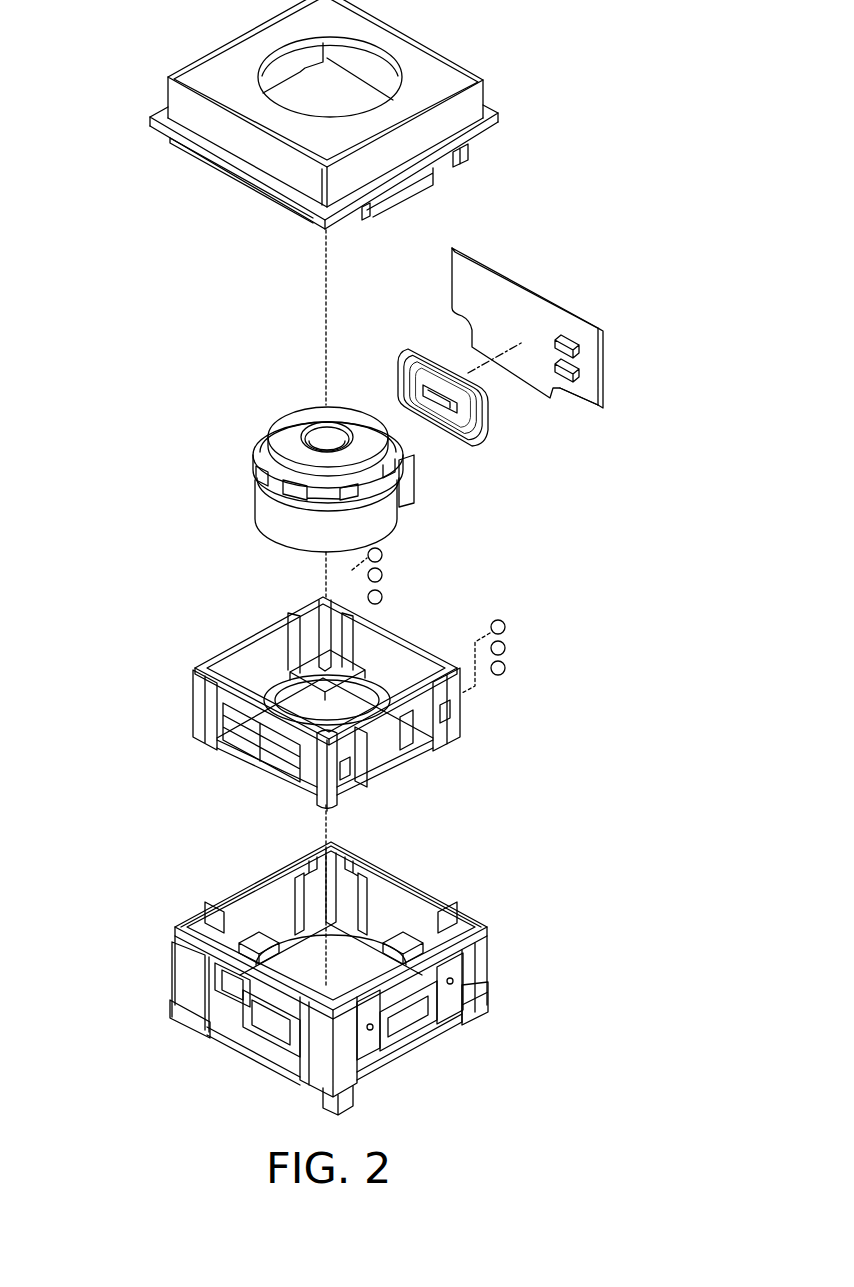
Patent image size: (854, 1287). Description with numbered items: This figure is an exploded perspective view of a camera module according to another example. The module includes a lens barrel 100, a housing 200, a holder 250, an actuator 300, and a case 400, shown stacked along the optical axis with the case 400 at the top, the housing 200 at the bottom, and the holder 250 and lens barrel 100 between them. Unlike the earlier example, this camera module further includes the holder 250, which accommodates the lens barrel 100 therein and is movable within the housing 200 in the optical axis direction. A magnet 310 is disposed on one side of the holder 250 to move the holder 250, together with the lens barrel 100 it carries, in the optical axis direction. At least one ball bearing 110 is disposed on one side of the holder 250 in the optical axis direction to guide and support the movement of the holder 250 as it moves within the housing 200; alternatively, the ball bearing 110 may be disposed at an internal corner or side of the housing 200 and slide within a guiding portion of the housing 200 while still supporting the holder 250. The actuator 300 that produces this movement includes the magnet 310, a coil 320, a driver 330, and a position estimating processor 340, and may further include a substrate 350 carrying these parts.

The lens barrel 100 is at (253, 480).
The ball bearing 110 is at (507, 654).
The housing 200 is at (183, 978).
The holder 250 is at (215, 712).
The actuator 300 is at (684, 353).
The magnet 310 is at (417, 637).
The coil 320 is at (487, 408).
The driver 330 is at (577, 353).
The position estimating processor 340 is at (577, 380).
The substrate 350 is at (587, 392).
The case 400 is at (165, 106).